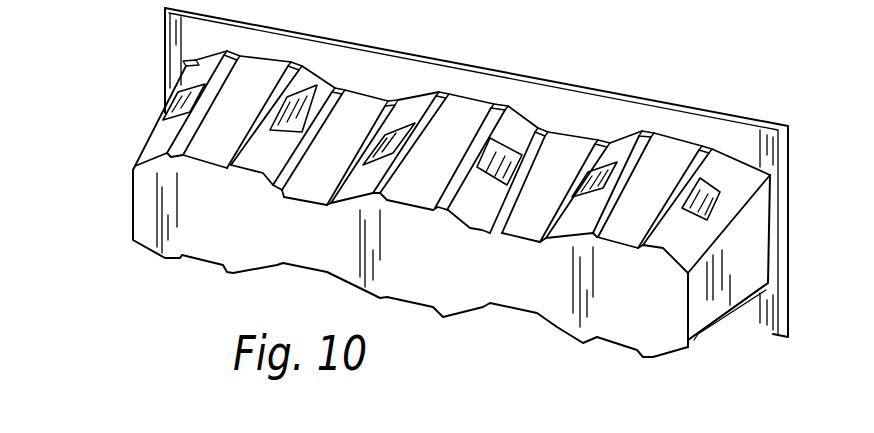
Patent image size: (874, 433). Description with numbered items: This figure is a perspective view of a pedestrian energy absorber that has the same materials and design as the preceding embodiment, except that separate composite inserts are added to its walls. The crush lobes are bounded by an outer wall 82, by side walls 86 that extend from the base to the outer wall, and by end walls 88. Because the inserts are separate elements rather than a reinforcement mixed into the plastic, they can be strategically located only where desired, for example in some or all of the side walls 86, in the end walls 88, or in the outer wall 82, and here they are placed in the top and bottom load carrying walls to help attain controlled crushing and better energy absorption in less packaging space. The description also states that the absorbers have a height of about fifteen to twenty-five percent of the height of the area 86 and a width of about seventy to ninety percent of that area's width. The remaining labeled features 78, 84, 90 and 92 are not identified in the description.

The back plate 78 is at (193, 40).
The outer wall 82 is at (202, 218).
The inclined face 84 is at (318, 78).
The side wall 86 is at (413, 113).
The end wall 88 is at (738, 251).
The assembly 90 is at (660, 81).
The slot 92 is at (172, 110).